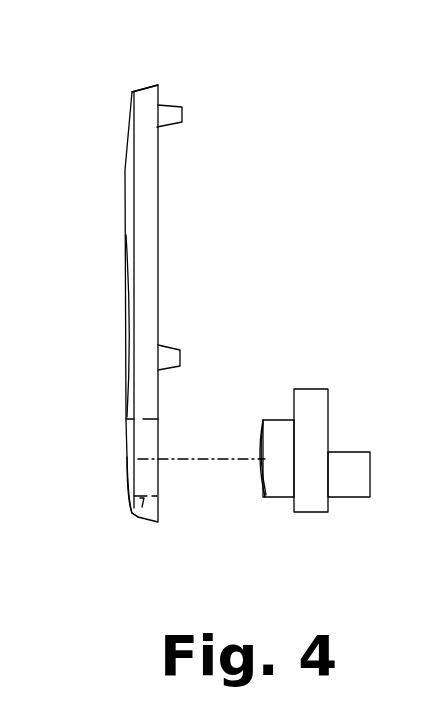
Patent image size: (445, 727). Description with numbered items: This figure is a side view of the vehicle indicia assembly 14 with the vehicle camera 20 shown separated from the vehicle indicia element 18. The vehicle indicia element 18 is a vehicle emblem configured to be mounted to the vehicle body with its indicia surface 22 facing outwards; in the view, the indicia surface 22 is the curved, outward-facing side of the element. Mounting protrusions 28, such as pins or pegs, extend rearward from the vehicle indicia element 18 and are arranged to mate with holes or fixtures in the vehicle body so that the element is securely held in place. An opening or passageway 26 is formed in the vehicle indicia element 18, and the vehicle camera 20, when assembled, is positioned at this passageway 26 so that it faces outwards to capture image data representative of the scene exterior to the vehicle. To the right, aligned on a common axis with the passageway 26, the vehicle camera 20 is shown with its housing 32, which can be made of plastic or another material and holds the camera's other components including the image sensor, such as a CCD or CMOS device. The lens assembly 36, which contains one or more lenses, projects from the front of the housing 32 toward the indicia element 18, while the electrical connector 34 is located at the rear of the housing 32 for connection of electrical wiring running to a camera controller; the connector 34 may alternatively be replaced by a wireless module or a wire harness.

The vehicle indicia assembly 14 is at (123, 75).
The vehicle indicia element 18 is at (158, 213).
The vehicle camera 20 is at (339, 452).
The indicia surface 22 is at (127, 275).
The opening or passageway 26 is at (132, 527).
The mounting protrusions 28 is at (170, 110).
The housing 32 is at (310, 387).
The electrical connector 34 is at (352, 453).
The lens assembly 36 is at (275, 428).